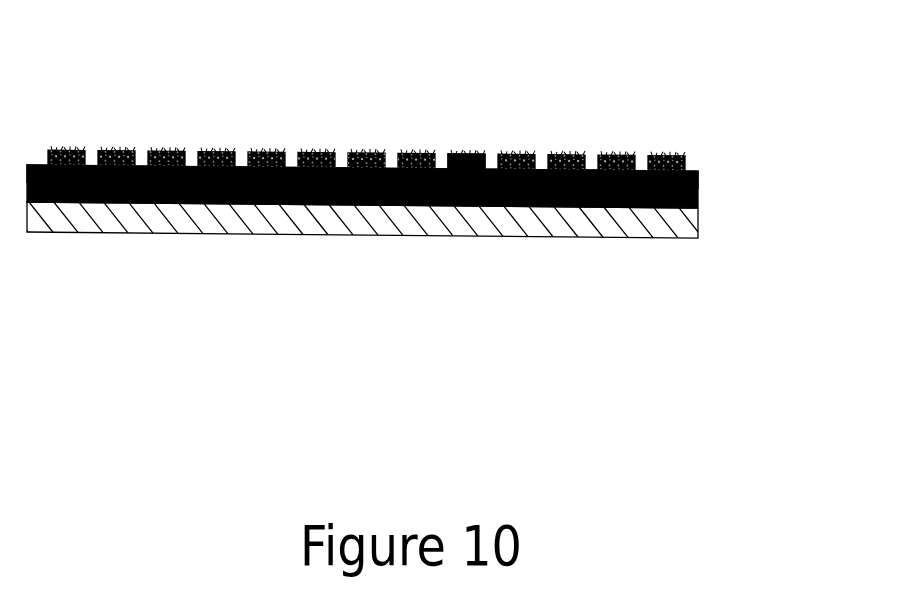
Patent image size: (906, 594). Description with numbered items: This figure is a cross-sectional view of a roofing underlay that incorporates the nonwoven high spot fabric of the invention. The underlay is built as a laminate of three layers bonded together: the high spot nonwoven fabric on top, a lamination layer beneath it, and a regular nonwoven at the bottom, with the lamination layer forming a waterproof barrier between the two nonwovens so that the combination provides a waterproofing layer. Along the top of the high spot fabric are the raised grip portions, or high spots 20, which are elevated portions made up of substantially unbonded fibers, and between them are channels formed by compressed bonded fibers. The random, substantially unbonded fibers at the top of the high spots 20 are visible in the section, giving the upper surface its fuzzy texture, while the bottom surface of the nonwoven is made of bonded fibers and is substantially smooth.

The high spots 20 is at (586, 168).